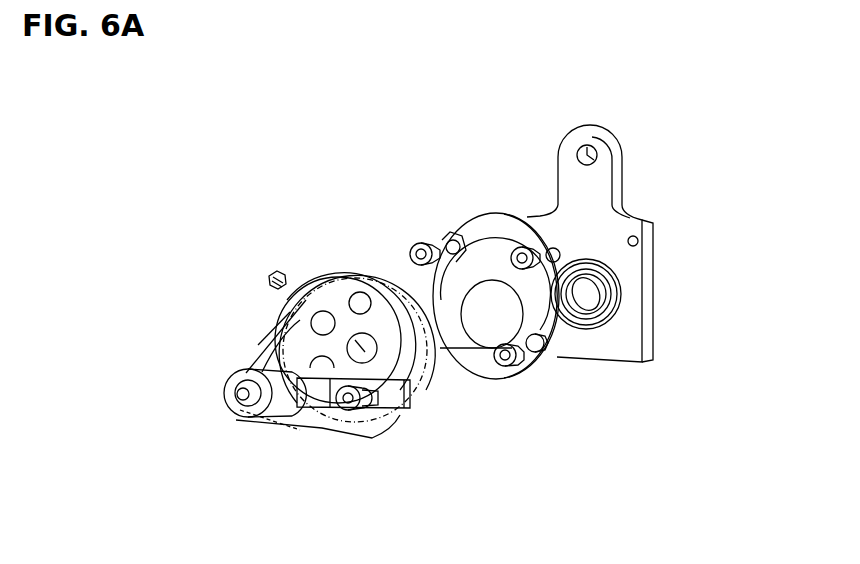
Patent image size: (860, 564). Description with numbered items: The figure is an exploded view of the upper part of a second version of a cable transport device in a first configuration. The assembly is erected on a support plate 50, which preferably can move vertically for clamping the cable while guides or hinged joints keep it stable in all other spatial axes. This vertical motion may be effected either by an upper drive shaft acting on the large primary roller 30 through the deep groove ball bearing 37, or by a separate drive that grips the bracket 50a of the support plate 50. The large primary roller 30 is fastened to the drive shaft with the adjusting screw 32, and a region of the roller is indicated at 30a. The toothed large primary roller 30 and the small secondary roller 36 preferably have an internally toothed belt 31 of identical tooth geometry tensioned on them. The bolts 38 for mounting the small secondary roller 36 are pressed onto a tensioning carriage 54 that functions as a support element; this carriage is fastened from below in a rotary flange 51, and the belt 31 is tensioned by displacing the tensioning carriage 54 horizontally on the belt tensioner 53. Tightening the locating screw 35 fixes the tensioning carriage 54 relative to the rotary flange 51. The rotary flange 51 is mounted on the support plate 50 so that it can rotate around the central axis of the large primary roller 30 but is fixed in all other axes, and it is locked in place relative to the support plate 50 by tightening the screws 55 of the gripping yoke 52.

The large primary roller 30 is at (337, 307).
The pulley face 30a is at (308, 293).
The belt 31 is at (258, 347).
The adjusting screw 32 is at (271, 271).
The locating screw 35 is at (381, 432).
The small secondary roller 36 is at (238, 417).
The deep groove ball bearing 37 is at (615, 320).
The bolts 38 is at (245, 375).
The support plate 50 is at (597, 227).
The bracket 50a is at (589, 135).
The rotary flange 51 is at (475, 287).
The gripping yoke 52 is at (497, 215).
The belt tensioner 53 is at (504, 370).
The tensioning carriage 54 is at (323, 407).
The screws 55 is at (418, 247).